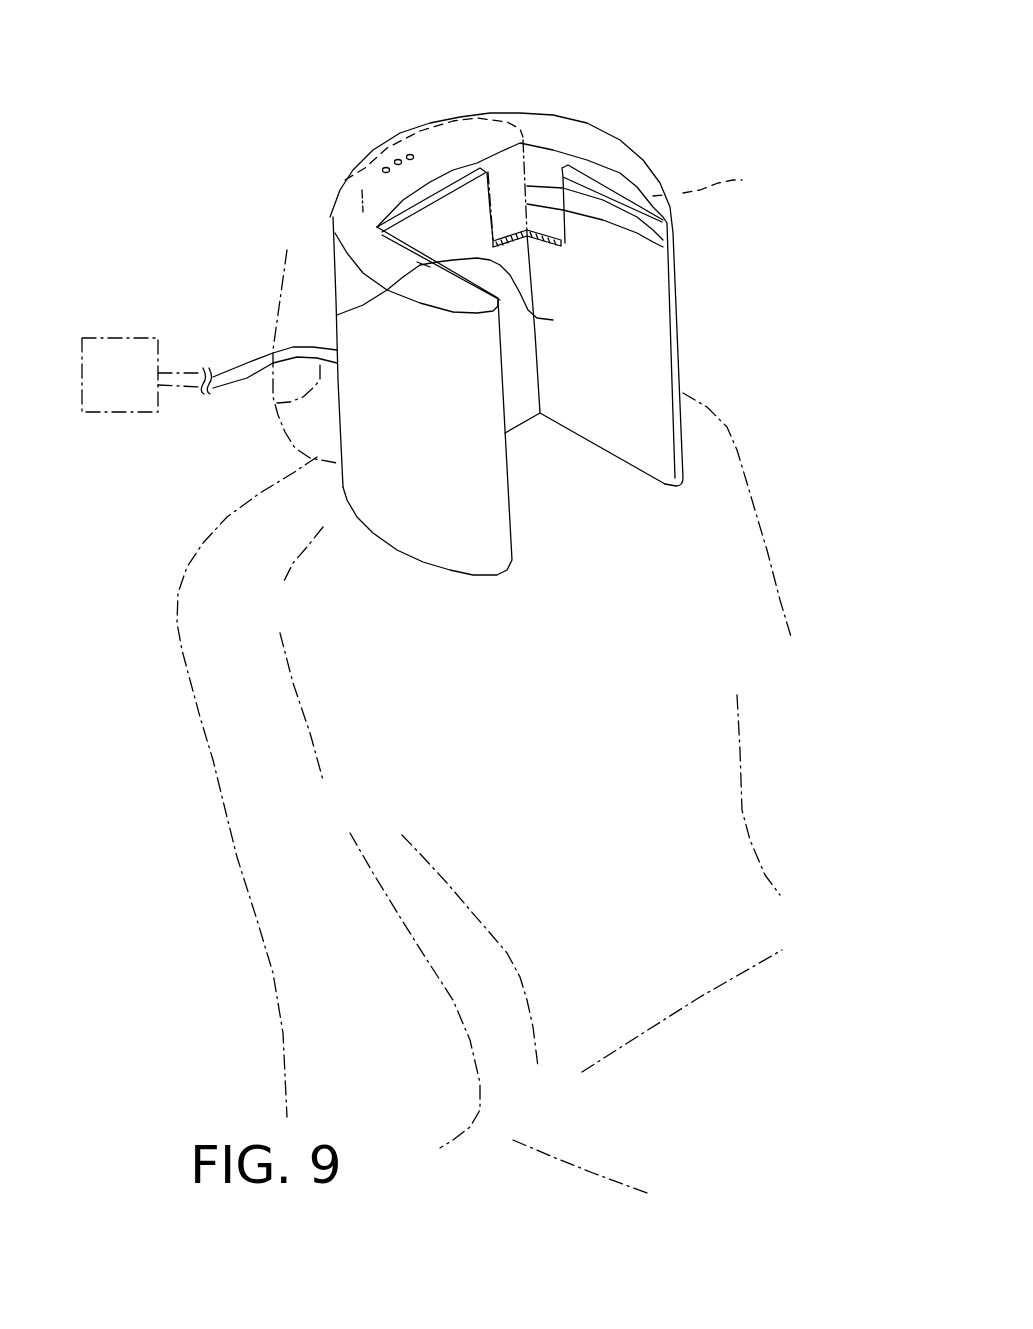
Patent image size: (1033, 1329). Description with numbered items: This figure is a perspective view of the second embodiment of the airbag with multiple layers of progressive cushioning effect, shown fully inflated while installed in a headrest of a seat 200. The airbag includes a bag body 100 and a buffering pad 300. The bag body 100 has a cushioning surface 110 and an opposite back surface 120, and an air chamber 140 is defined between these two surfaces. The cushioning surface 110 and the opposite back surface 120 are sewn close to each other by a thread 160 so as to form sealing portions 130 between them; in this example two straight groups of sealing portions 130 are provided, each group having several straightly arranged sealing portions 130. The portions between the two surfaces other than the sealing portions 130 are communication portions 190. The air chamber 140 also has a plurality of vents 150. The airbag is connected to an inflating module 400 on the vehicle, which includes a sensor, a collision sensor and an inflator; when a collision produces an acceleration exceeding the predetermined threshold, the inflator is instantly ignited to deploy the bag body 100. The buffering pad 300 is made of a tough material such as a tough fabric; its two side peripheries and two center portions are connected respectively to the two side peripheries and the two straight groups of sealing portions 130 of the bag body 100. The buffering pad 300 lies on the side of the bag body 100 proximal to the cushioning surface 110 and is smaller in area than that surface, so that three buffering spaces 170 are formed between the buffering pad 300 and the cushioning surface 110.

The bag body 100 is at (587, 113).
The cushioning surface 110 is at (377, 227).
The opposite back surface 120 is at (330, 215).
The sealing portions 130 is at (364, 233).
The thread 160 is at (398, 126).
The air chamber 140 is at (345, 178).
The vents 150 is at (408, 155).
The buffering spaces 170 is at (337, 315).
The communication portions 190 is at (663, 247).
The seat back 200 is at (277, 403).
The buffering pad 300 is at (463, 207).
The inflating module 400 is at (117, 413).